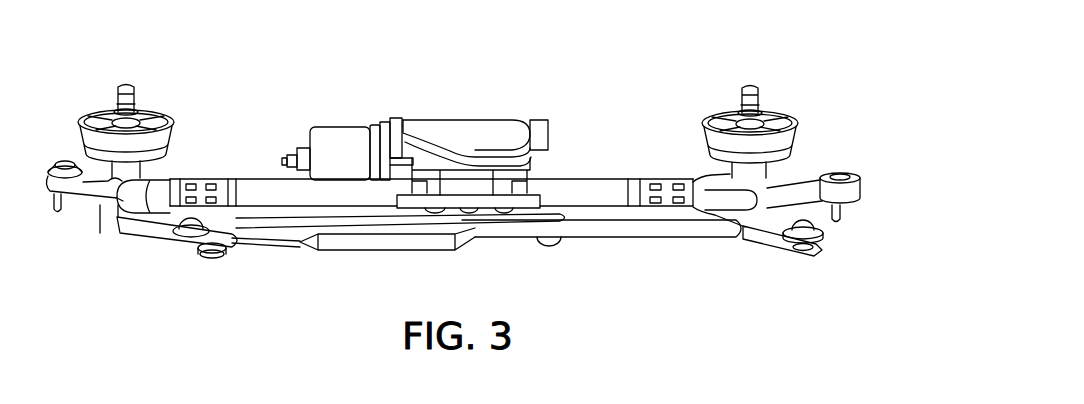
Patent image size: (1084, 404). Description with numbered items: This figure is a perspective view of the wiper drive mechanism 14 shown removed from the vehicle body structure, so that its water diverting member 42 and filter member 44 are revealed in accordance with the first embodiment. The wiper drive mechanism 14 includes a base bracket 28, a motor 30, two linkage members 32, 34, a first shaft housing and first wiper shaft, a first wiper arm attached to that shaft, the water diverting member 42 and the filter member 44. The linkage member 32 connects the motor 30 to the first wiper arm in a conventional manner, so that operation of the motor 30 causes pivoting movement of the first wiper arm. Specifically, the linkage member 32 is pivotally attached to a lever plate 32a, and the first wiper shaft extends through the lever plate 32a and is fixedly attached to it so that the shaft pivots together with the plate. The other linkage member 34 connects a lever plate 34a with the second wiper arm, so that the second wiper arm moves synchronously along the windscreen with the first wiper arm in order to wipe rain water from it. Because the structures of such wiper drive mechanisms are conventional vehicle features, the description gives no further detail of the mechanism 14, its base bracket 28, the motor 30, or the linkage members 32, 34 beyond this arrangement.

The wiper drive mechanism 14 is at (678, 38).
The base bracket 28 is at (528, 201).
The motor 30 is at (474, 130).
The linkage member 32 is at (628, 230).
The lever plate 32a is at (813, 257).
The linkage member 34 is at (333, 249).
The lever plate 34a is at (163, 223).
The water diverting member 42 is at (168, 148).
The filter member 44 is at (178, 127).